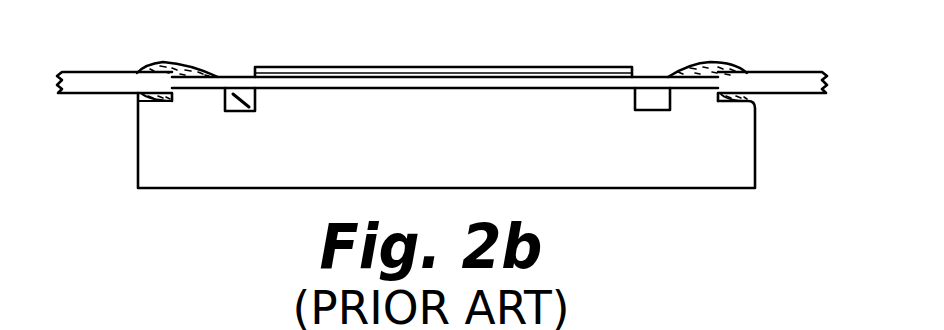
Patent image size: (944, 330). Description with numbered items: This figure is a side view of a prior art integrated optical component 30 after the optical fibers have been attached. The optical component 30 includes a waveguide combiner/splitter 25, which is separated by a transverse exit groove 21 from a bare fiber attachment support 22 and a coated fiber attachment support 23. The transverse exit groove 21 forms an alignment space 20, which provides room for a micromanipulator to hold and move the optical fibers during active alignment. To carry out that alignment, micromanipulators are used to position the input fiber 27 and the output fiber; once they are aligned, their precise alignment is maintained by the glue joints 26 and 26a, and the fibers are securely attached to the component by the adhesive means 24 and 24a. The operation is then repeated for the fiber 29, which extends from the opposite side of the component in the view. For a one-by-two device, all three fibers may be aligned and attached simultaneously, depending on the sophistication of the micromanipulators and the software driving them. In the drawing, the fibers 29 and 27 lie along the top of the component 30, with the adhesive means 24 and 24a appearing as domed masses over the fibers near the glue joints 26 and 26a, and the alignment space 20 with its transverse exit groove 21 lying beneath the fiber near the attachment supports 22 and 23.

The alignment space 20 is at (255, 109).
The transverse exit groove 21 is at (232, 109).
The bare fiber attachment support 22 is at (192, 90).
The coated fiber attachment support 23 is at (155, 101).
The adhesive means 24 is at (193, 68).
The adhesive means 24a is at (695, 68).
The waveguide combiner/splitter 25 is at (424, 80).
The glue joint 26 is at (253, 76).
The glue joint 26a is at (641, 76).
The input fiber 27 is at (799, 73).
The fiber 29 is at (88, 81).
The optical component 30 is at (455, 144).